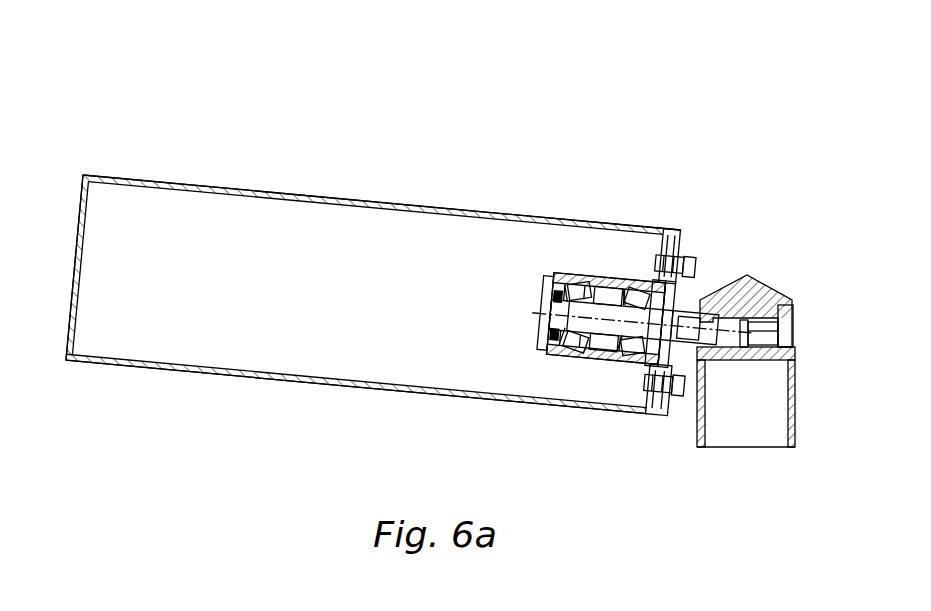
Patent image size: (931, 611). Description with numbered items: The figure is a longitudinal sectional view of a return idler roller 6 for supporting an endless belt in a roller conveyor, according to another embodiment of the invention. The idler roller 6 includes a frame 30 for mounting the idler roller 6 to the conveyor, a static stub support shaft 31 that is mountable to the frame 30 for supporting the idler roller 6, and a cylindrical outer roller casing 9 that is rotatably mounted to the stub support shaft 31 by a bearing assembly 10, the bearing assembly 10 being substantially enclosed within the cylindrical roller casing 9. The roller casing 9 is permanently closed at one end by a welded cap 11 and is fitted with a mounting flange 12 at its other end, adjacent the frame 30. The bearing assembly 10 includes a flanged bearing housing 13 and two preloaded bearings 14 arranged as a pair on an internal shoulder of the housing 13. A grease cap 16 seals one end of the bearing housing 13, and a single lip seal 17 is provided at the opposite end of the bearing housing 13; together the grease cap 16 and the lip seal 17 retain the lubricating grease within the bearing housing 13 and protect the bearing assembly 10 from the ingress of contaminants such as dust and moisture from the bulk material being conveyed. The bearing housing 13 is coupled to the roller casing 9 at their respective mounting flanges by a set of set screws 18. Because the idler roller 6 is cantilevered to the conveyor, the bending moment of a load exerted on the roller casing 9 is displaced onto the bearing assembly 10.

The return idler roller 6 is at (209, 108).
The cylindrical outer roller casing 9 is at (308, 196).
The bearing assembly 10 is at (572, 270).
The welded cap 11 is at (73, 258).
The mounting flange 12 is at (670, 252).
The flanged bearing housing 13 is at (636, 278).
The preloaded bearings 14 is at (578, 364).
The grease cap 16 is at (543, 301).
The single lip seal 17 is at (645, 372).
The set screws 18 is at (686, 262).
The frame 30 is at (762, 292).
The static stub support shaft 31 is at (606, 305).